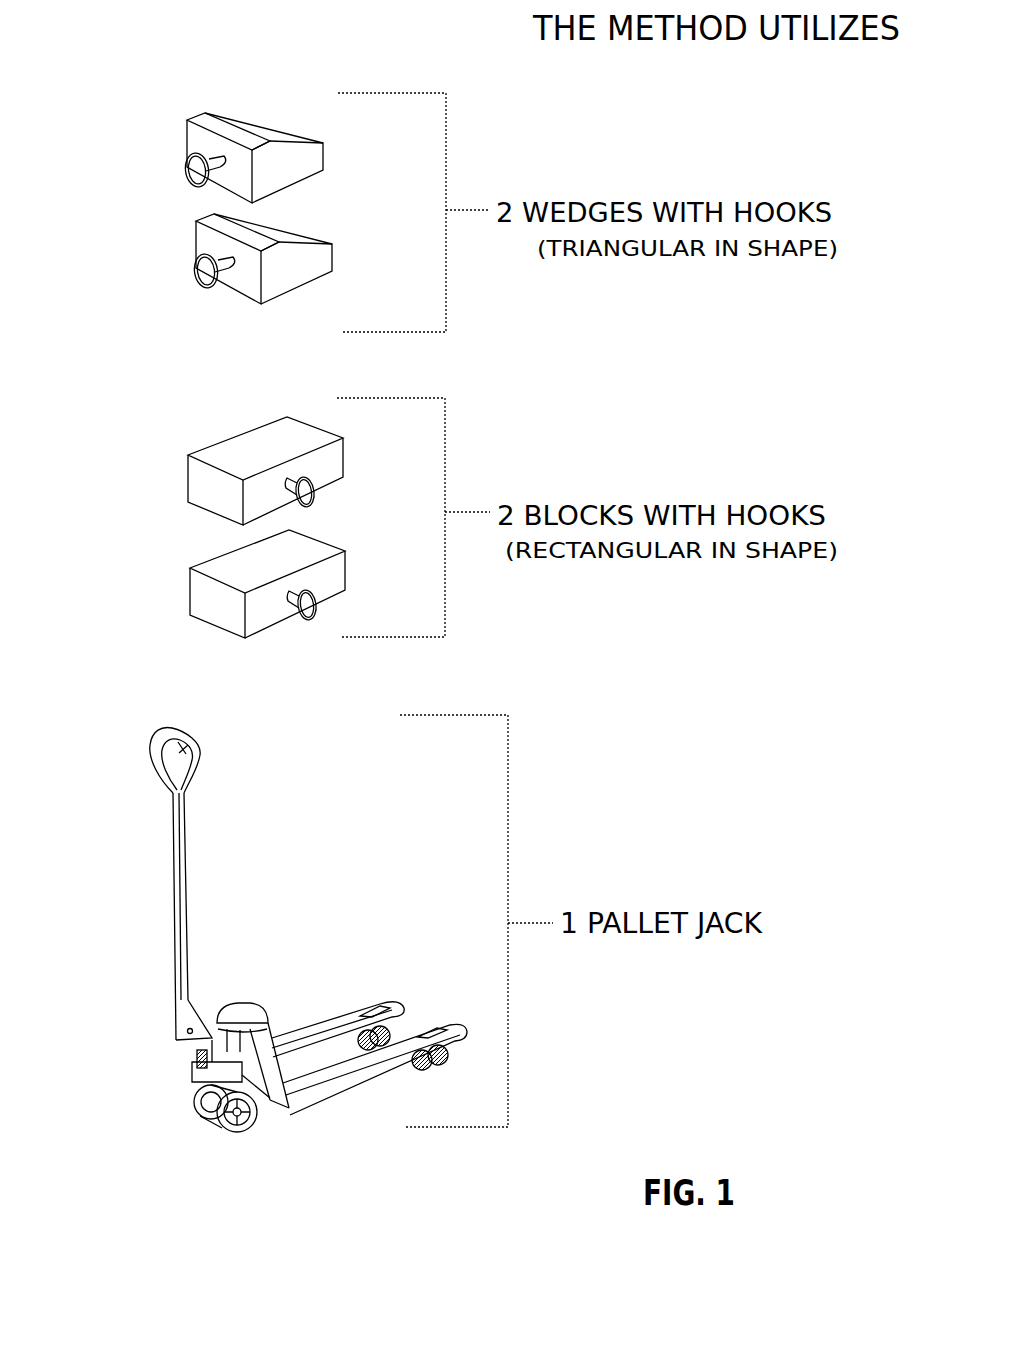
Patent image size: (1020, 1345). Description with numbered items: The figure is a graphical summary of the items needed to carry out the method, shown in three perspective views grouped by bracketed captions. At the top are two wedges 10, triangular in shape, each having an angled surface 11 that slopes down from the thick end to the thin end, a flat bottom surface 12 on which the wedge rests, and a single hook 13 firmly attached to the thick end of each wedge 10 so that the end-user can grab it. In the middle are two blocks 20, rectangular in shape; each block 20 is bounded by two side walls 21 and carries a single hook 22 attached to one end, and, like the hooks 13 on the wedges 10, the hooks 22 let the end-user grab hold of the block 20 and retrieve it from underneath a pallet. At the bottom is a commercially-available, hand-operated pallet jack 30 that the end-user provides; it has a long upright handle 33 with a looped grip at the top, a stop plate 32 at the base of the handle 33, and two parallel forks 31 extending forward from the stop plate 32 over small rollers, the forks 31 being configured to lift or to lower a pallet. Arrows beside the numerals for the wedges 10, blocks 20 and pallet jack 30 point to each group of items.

The wedge 10 is at (122, 227).
The angled surface 11 is at (268, 130).
The bottom surface 12 is at (302, 180).
The hook 13 is at (201, 290).
The block 20 is at (124, 553).
The side walls 21 is at (228, 450).
The hook 22 is at (315, 502).
The pallet jack 30 is at (118, 983).
The forks 31 is at (445, 1022).
The stop plate 32 is at (272, 1020).
The handle 33 is at (183, 845).